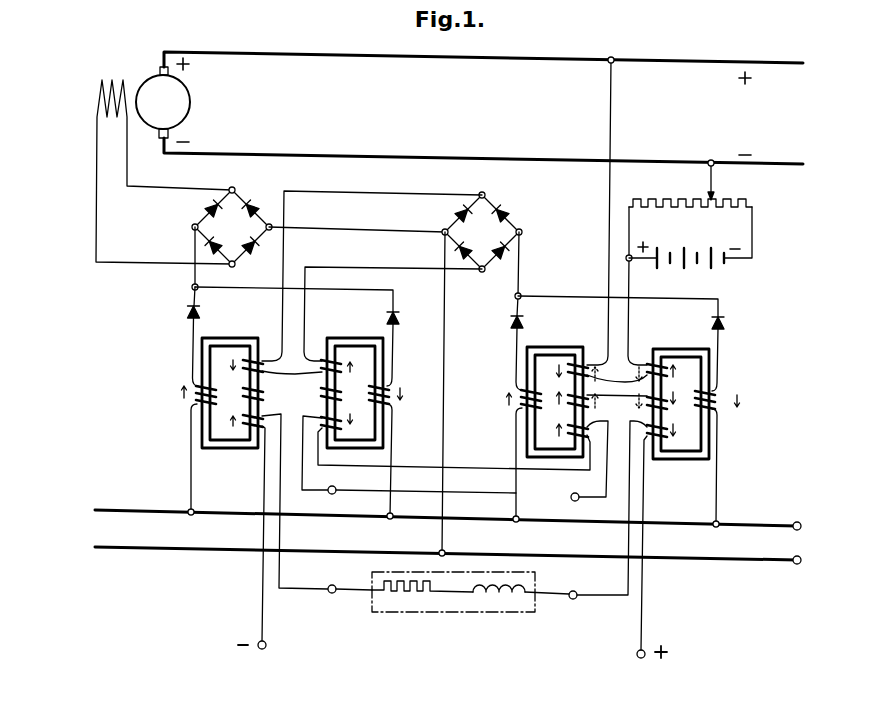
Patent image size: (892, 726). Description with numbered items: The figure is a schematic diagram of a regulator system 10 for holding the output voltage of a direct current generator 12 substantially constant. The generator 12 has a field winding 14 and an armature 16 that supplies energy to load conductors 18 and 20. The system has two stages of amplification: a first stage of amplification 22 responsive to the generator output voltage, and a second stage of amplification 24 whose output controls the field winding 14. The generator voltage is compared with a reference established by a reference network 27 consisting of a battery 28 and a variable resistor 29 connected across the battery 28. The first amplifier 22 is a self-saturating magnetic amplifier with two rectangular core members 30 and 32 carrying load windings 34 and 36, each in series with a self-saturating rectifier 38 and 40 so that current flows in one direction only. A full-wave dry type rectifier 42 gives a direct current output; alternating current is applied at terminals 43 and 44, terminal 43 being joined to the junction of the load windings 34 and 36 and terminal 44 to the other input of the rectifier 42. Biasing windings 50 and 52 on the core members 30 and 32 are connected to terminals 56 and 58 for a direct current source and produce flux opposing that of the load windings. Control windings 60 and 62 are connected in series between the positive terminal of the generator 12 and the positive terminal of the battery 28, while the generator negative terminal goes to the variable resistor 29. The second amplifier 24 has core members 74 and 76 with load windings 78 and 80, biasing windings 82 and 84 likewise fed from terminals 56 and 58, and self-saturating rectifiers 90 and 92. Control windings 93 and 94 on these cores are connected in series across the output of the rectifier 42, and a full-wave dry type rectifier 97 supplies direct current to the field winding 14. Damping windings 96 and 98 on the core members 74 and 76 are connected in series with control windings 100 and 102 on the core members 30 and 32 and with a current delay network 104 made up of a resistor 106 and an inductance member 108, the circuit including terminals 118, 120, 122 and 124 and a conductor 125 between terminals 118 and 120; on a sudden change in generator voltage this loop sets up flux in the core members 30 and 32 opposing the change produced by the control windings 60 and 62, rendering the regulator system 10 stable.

The regulator system 10 is at (456, 345).
The direct current generator 12 is at (149, 45).
The field winding 14 is at (116, 75).
The armature 16 is at (191, 105).
The load conductor 18 is at (562, 58).
The load conductor 20 is at (516, 158).
The first stage of amplification 22 is at (621, 353).
The second stage of amplification 24 is at (377, 416).
The reference network 27 is at (703, 225).
The battery 28 is at (686, 263).
The variable resistor 29 is at (727, 200).
The core member 30 is at (549, 347).
The core member 32 is at (674, 349).
The load winding 34 is at (523, 404).
The load winding 36 is at (722, 408).
The self-saturating rectifier 38 is at (511, 322).
The self-saturating rectifier 40 is at (725, 323).
The full-wave dry type rectifier 42 is at (483, 222).
The terminal 43 is at (800, 523).
The terminal 44 is at (800, 564).
The biasing winding 50 is at (571, 430).
The biasing winding 52 is at (667, 431).
The terminal 56 is at (267, 645).
The terminal 58 is at (636, 653).
The control winding 60 is at (571, 368).
The control winding 62 is at (668, 368).
The core member 74 is at (221, 338).
The core member 76 is at (346, 339).
The load winding 78 is at (196, 401).
The load winding 80 is at (388, 404).
The biasing winding 82 is at (247, 423).
The biasing winding 84 is at (339, 424).
The self-saturating rectifier 90 is at (185, 311).
The self-saturating rectifier 92 is at (400, 318).
The control winding 93 is at (246, 360).
The control winding 94 is at (338, 361).
The damping winding 96 is at (263, 396).
The full-wave dry type rectifier 97 is at (230, 214).
The damping winding 98 is at (331, 396).
The control winding 100 is at (575, 398).
The control winding 102 is at (661, 398).
The current delay network 104 is at (452, 603).
The resistor 106 is at (395, 592).
The inductance member 108 is at (478, 592).
The terminal 118 is at (336, 488).
The terminal 120 is at (575, 492).
The terminal 122 is at (343, 576).
The terminal 124 is at (574, 591).
The conductor 125 is at (468, 494).